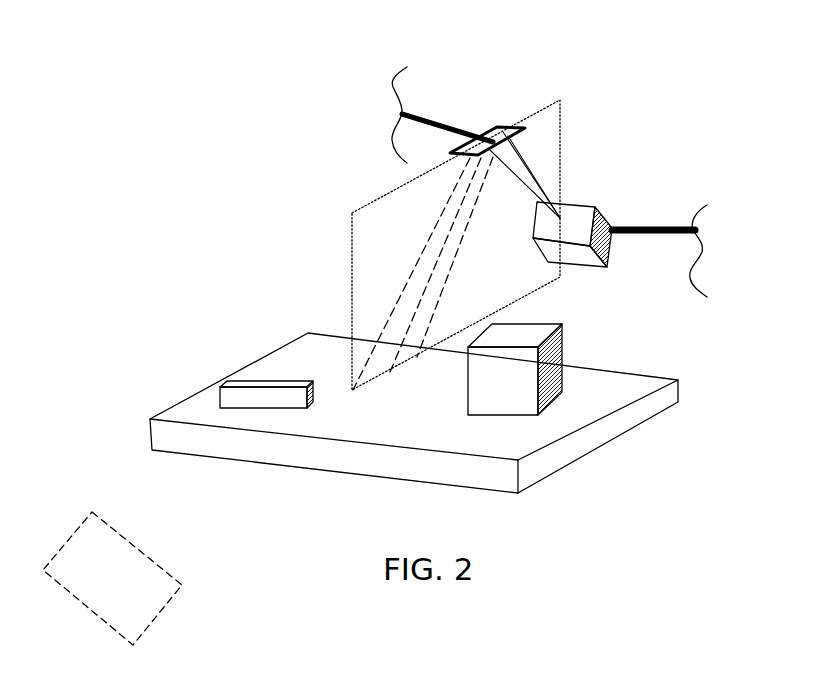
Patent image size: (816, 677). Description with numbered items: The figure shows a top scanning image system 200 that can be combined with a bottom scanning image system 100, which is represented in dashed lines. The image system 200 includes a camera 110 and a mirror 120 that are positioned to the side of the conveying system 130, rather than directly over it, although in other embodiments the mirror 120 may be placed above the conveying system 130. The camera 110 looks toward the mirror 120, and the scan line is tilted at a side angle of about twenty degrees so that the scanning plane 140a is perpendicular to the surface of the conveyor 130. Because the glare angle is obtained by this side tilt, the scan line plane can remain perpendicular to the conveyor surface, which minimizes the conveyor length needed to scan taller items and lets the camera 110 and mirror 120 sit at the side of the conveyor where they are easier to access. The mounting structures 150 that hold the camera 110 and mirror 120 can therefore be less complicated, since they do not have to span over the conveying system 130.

The top scanning image system 200 is at (262, 121).
The bottom scanning image system 100 is at (134, 587).
The camera 110 is at (582, 265).
The mirror 120 is at (497, 127).
The conveying system 130 is at (347, 462).
The scanning plane 140a is at (537, 292).
The mounting structures 150 is at (441, 124).